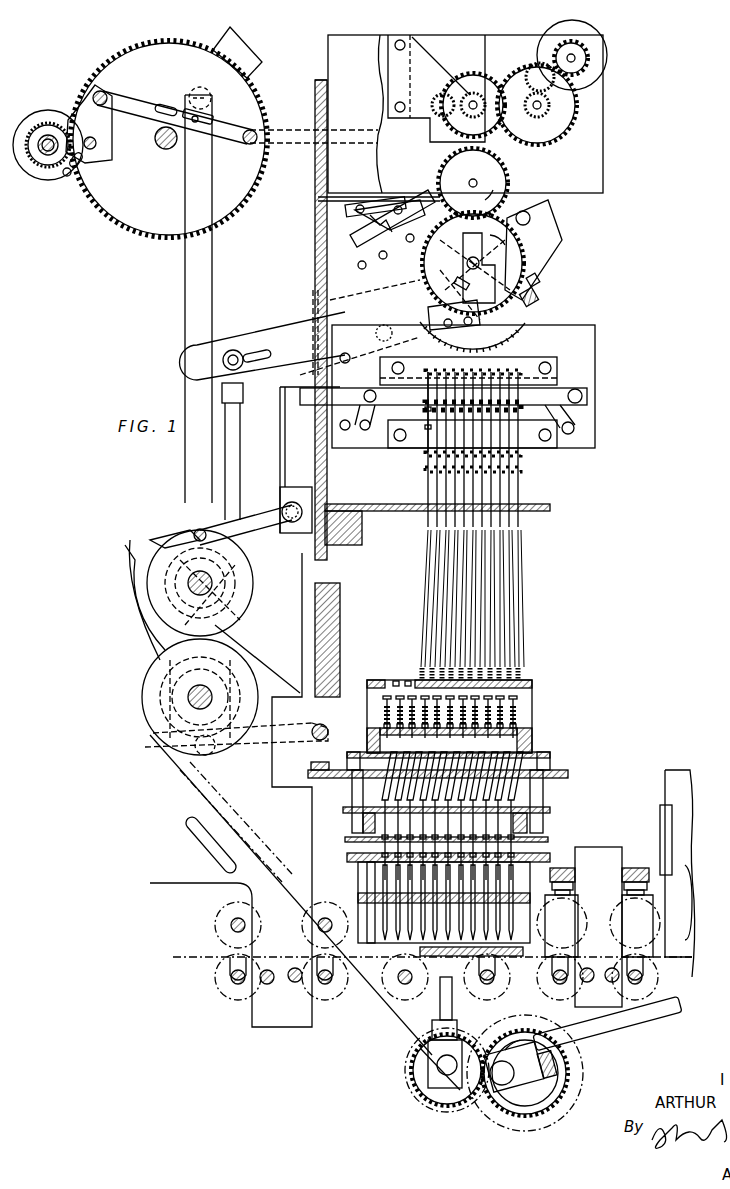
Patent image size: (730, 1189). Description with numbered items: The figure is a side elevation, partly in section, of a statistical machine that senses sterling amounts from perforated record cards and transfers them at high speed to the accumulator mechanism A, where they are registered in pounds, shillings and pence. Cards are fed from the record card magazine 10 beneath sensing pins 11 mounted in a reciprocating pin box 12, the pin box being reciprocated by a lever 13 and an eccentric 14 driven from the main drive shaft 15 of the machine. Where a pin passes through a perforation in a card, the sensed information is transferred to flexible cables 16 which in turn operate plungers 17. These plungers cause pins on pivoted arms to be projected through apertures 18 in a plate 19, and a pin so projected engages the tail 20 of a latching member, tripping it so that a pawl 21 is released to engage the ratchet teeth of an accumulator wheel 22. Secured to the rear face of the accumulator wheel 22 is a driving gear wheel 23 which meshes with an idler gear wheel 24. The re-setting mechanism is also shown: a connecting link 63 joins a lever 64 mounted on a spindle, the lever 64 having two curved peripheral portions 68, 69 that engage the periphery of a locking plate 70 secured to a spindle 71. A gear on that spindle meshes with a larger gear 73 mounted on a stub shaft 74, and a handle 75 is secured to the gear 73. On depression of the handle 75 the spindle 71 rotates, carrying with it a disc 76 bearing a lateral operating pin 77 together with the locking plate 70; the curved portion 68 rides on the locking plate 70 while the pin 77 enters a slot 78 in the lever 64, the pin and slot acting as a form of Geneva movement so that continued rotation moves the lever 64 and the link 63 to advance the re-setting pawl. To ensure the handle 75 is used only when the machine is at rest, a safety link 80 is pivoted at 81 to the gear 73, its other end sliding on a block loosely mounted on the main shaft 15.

The record card magazine 10 is at (677, 768).
The sensing pins 11 is at (500, 928).
The reciprocating pin box 12 is at (357, 876).
The lever 13 is at (440, 1005).
The eccentric 14 is at (430, 1067).
The main drive shaft 15 is at (192, 700).
The flexible cables 16 is at (512, 586).
The plungers 17 is at (522, 453).
The apertures 18 is at (545, 305).
The plate 19 is at (565, 335).
The tail 20 is at (520, 333).
The pawl 21 is at (425, 306).
The accumulator wheel 22 is at (390, 242).
The driving gear wheel 23 is at (500, 243).
The idler gear wheel 24 is at (484, 173).
The connecting link 63 is at (226, 128).
The lever 64 is at (113, 130).
The curved peripheral portion 68 is at (70, 140).
The curved peripheral portion 69 is at (88, 162).
The locking plate 70 is at (45, 156).
The spindle 71 is at (44, 152).
The gear 73 is at (140, 65).
The stub shaft 74 is at (166, 150).
The handle 75 is at (236, 49).
The disc 76 is at (72, 125).
The operating pin 77 is at (67, 177).
The slot 78 is at (80, 162).
The link 80 is at (197, 308).
The pivot 81 is at (211, 98).
The accumulator mechanism A is at (606, 100).